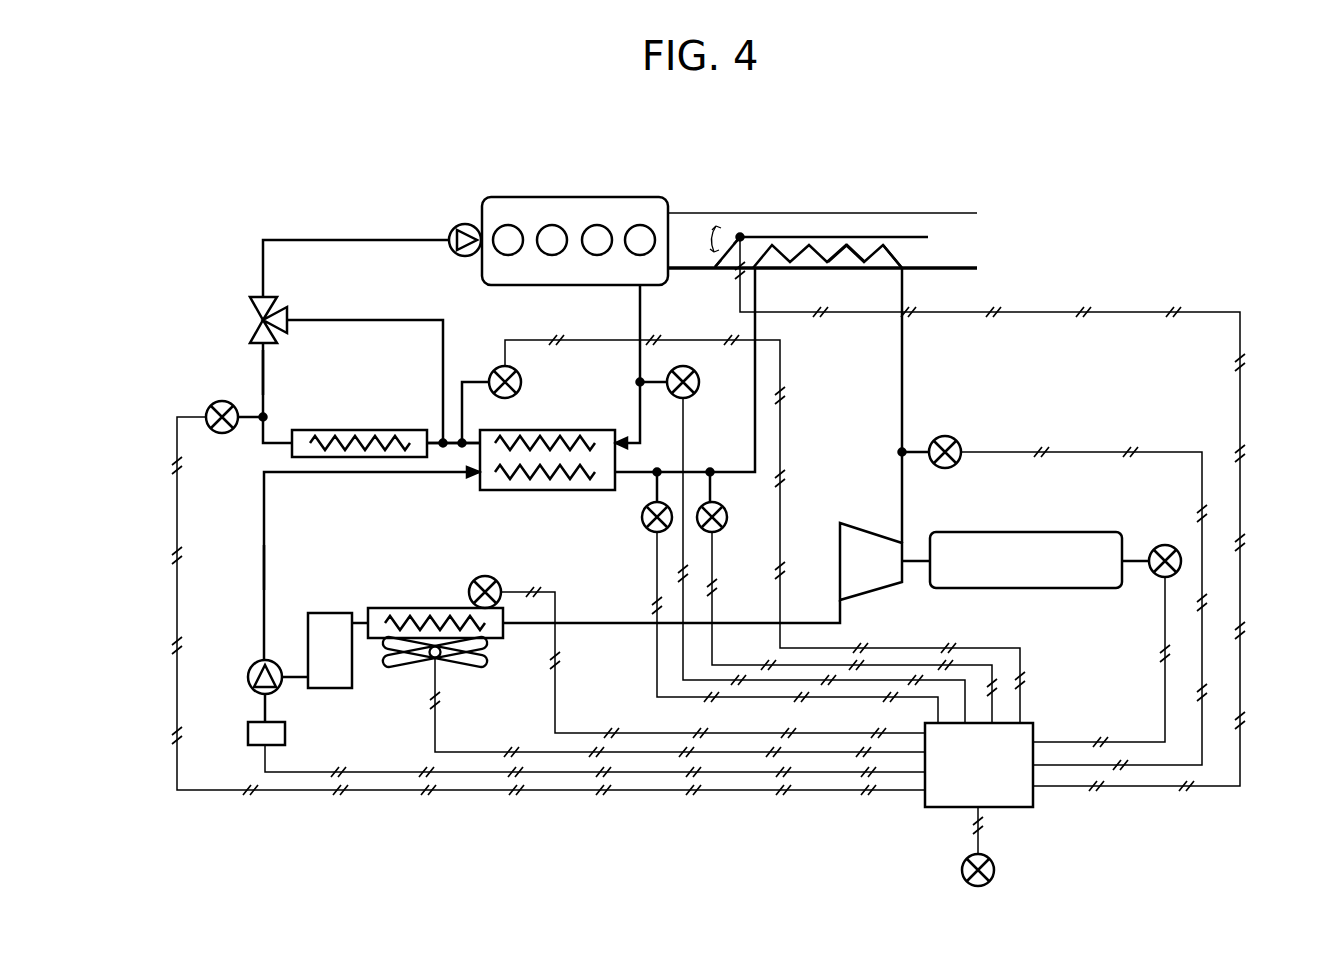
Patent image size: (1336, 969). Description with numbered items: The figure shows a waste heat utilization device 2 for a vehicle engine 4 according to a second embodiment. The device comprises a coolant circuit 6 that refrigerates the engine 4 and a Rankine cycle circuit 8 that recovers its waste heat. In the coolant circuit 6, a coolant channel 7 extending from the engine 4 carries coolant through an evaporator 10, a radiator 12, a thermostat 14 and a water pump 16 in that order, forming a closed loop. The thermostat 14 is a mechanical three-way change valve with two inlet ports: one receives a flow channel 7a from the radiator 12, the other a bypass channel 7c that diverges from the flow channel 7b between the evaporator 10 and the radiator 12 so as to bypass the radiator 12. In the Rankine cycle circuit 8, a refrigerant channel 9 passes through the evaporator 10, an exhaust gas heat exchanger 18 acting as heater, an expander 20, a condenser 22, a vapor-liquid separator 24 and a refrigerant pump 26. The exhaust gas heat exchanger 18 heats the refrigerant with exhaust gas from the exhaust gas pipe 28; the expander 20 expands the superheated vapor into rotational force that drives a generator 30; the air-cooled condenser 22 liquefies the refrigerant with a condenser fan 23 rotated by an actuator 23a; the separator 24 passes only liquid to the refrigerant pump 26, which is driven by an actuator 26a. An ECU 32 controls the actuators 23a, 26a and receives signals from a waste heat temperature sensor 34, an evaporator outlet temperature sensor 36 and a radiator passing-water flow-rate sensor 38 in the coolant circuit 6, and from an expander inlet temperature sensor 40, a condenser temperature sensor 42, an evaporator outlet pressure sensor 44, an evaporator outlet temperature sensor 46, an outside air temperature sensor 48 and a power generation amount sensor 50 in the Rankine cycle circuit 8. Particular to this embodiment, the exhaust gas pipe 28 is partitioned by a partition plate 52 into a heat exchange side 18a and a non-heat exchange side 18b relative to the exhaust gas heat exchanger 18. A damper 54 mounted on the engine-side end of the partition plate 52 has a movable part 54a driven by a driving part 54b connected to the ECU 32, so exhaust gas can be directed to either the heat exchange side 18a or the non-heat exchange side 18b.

The waste heat utilization device 2 is at (838, 148).
The engine 4 is at (525, 197).
The coolant circuit 6 is at (264, 357).
The coolant channel 7 is at (262, 382).
The flow channel 7a is at (267, 362).
The flow channel 7b is at (437, 439).
The bypass channel 7c is at (384, 319).
The Rankine cycle circuit 8 is at (264, 503).
The refrigerant channel 9 is at (262, 565).
The evaporator 10 is at (595, 430).
The radiator 12 is at (340, 430).
The thermostat 14 is at (253, 309).
The water pump 16 is at (464, 223).
The exhaust gas heat exchanger 18 is at (798, 242).
The heat exchange side 18a is at (898, 246).
The non-heat exchange side 18b is at (852, 230).
The expander 20 is at (861, 522).
The condenser 22 is at (390, 608).
The condenser fan 23 is at (405, 658).
The actuator 23a is at (438, 656).
The vapor-liquid separator 24 is at (325, 613).
The refrigerant pump 26 is at (247, 678).
The actuator 26a is at (285, 733).
The exhaust gas pipe 28 is at (680, 211).
The generator 30 is at (1088, 531).
The ECU 32 is at (1020, 810).
The waste heat temperature sensor 34 is at (696, 394).
The evaporator outlet temperature sensor 36 is at (521, 374).
The radiator passing-water flow-rate sensor 38 is at (210, 406).
The expander inlet temperature sensor 40 is at (945, 436).
The condenser temperature sensor 42 is at (485, 576).
The evaporator outlet pressure sensor 44 is at (641, 522).
The evaporator outlet temperature sensor 46 is at (724, 527).
The outside air temperature sensor 48 is at (961, 871).
The power generation amount sensor 50 is at (1160, 545).
The partition plate 52 is at (908, 235).
The damper 54 is at (732, 238).
The movable part 54a is at (727, 262).
The driving part 54b is at (744, 231).